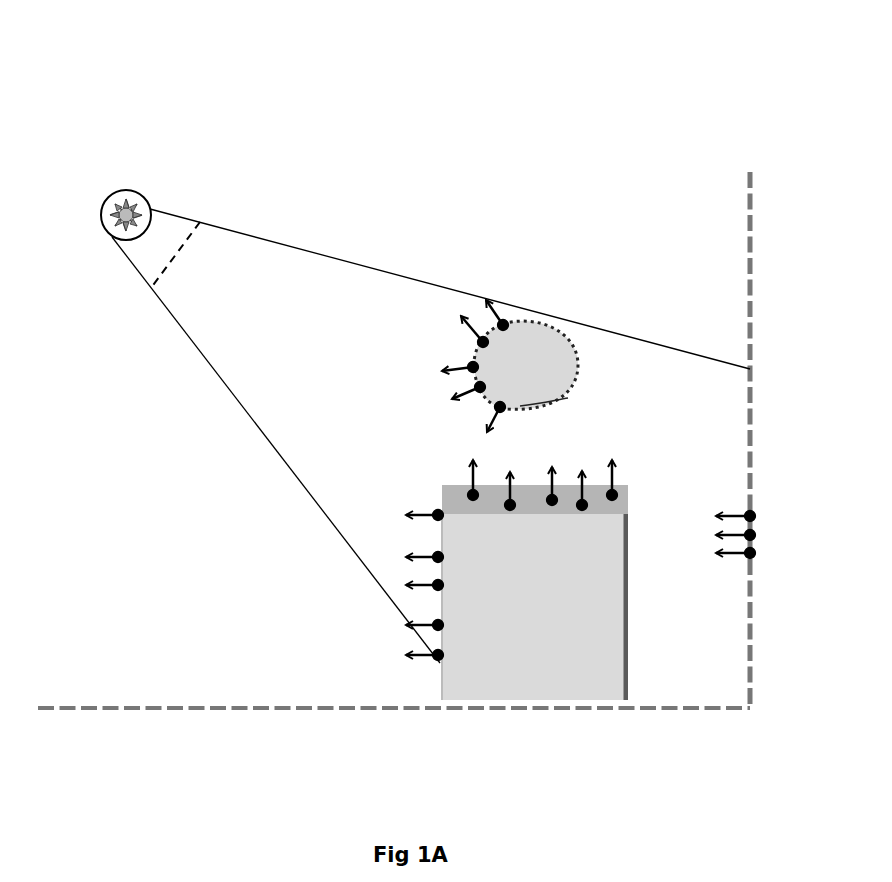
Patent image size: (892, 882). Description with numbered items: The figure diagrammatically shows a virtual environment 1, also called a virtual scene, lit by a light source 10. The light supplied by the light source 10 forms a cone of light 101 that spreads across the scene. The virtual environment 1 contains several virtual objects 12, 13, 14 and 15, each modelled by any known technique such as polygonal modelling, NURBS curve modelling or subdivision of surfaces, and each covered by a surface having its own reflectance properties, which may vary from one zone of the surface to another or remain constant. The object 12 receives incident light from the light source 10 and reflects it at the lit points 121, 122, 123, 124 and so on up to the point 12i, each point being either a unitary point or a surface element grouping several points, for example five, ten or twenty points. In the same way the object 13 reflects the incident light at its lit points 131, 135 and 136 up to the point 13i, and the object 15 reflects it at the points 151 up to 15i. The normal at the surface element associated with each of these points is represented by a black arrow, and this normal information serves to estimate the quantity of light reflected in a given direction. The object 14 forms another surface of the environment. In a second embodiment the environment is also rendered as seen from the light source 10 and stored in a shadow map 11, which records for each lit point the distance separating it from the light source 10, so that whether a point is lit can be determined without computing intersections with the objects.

The virtual environment 1 is at (547, 161).
The light source 10 is at (103, 208).
The shadow map 11 is at (140, 274).
The cone of light 101 is at (280, 247).
The virtual object 12 is at (537, 342).
The point 12i is at (556, 400).
The point 121 is at (505, 320).
The point 122 is at (470, 343).
The point 123 is at (460, 375).
The point 124 is at (457, 405).
The virtual object 13 is at (578, 677).
The point 13i is at (620, 492).
The point 131 is at (440, 663).
The point 135 is at (437, 518).
The point 136 is at (468, 494).
The virtual object 14 is at (222, 708).
The virtual object 15 is at (750, 290).
The point 15i is at (752, 514).
The point 151 is at (750, 556).